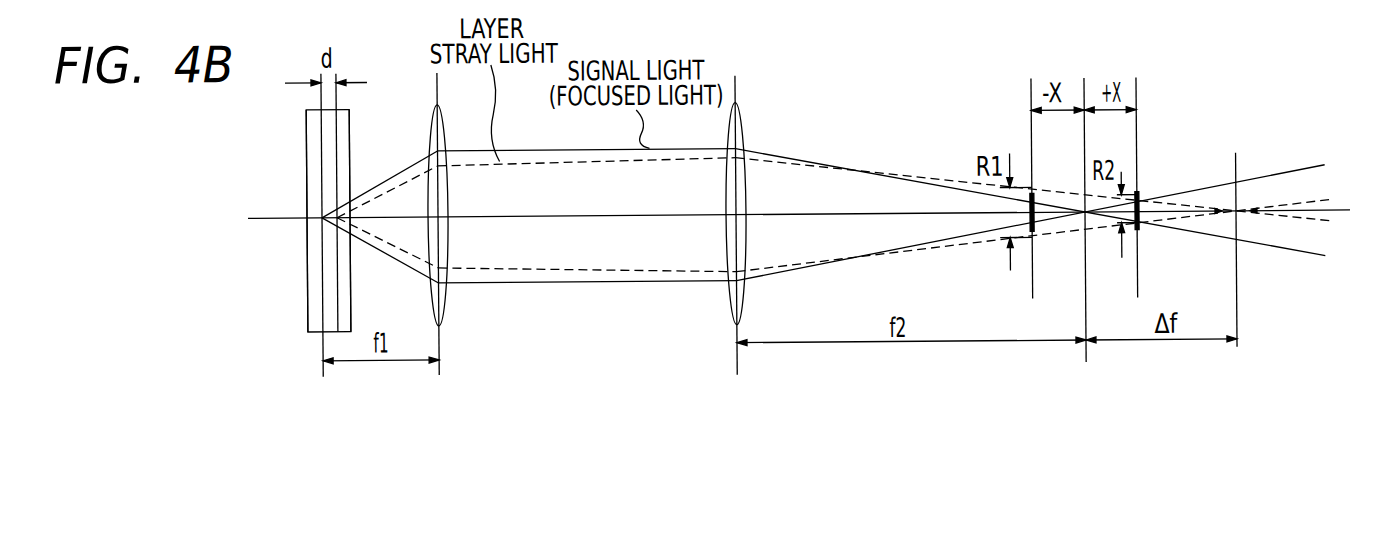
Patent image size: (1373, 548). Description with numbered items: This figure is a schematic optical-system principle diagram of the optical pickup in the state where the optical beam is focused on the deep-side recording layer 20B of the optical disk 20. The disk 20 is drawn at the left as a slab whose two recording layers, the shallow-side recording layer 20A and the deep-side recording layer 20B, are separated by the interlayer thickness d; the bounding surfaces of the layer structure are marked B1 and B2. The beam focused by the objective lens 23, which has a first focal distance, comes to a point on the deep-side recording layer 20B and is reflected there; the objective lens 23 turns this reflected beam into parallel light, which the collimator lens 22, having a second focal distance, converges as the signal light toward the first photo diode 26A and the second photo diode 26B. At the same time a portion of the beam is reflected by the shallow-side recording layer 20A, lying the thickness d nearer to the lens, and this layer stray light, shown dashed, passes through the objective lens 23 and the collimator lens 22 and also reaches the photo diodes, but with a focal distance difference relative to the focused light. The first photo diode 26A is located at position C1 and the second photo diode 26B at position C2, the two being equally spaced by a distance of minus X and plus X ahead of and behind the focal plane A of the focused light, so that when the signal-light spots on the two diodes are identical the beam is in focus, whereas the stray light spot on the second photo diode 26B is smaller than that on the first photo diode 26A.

The optical disk 20 is at (307, 121).
The shallow-side recording layer 20A is at (337, 111).
The deep-side recording layer 20B is at (322, 138).
The first beam / layer boundary B1 is at (337, 297).
The second beam / layer boundary B2 is at (307, 301).
The objective lens 23 is at (445, 307).
The collimator lens 22 is at (725, 309).
The first photo diode 26A is at (1036, 229).
The second photo diode 26B is at (1140, 228).
The first detector position C1 is at (1031, 174).
The focal plane A is at (1085, 206).
The second detector position C2 is at (1136, 174).